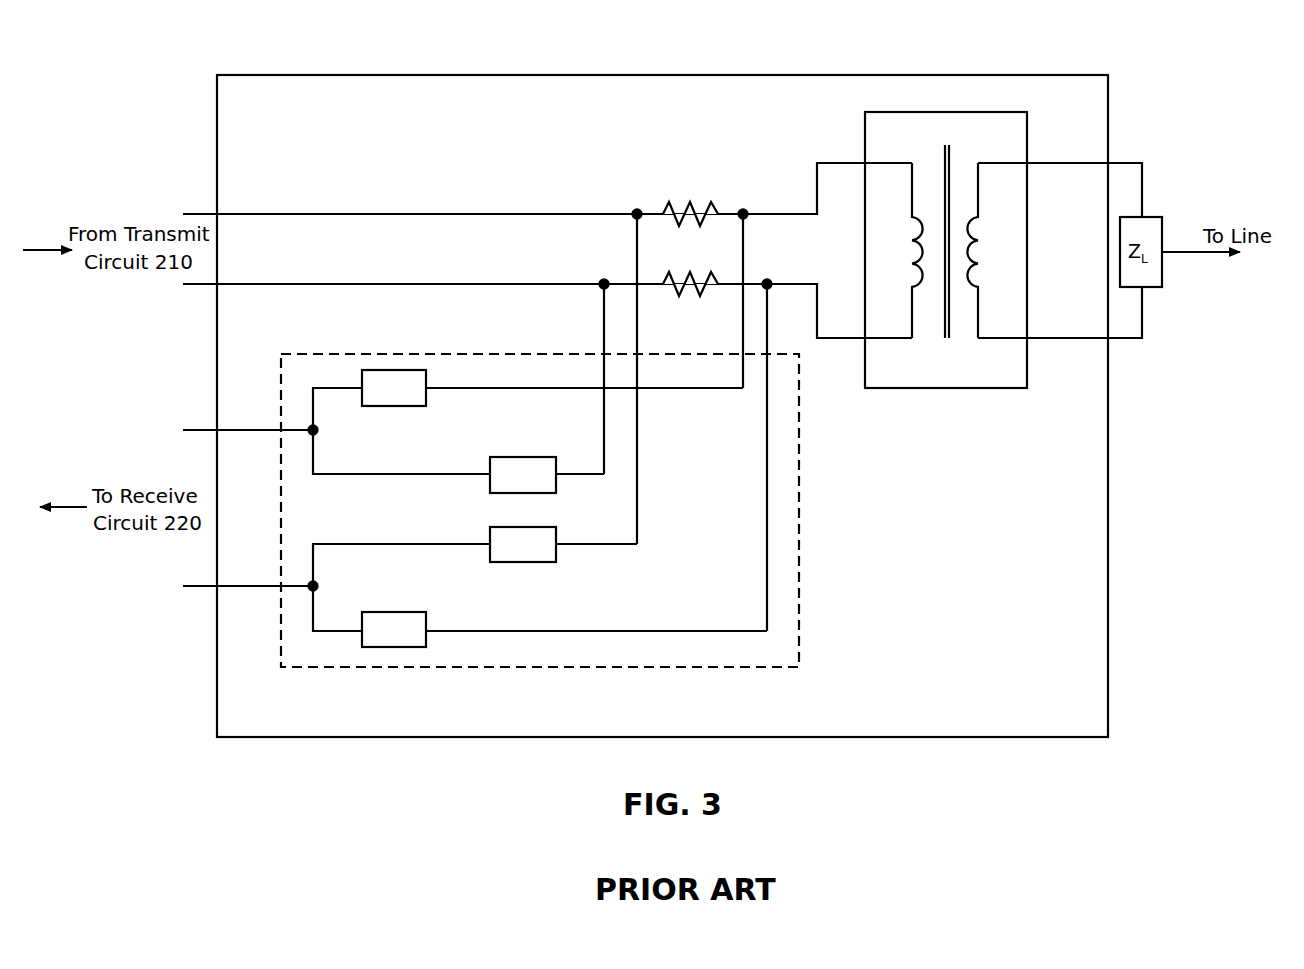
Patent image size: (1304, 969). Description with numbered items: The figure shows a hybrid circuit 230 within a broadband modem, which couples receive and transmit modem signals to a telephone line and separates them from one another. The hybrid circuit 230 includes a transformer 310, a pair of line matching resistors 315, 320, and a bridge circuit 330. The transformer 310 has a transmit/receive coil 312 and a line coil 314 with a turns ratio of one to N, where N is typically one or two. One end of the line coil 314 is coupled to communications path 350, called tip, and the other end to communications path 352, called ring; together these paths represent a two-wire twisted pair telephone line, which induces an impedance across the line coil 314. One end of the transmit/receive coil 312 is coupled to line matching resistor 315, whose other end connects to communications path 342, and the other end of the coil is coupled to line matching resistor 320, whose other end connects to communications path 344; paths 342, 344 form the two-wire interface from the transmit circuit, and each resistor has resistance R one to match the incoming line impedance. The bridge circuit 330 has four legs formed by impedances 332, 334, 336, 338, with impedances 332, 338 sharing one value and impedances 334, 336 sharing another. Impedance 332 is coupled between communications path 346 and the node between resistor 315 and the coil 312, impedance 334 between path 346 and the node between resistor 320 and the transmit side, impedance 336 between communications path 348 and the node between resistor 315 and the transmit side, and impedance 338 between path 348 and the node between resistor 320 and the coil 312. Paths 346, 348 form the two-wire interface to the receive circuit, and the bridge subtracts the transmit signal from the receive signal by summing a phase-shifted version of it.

The hybrid circuit 230 is at (1108, 100).
The transformer 310 is at (968, 242).
The transmit/receive coil 312 is at (912, 224).
The line coil 314 is at (978, 224).
The line matching resistor 315 is at (695, 207).
The line matching resistor 320 is at (690, 278).
The bridge circuit 330 is at (800, 478).
The impedance 332 is at (410, 370).
The impedance 334 is at (522, 457).
The impedance 336 is at (546, 527).
The impedance 338 is at (410, 612).
The communications path 342 is at (378, 214).
The communications path 344 is at (370, 284).
The communications path 346 is at (232, 430).
The communications path 348 is at (232, 586).
The communications path 350 is at (1122, 164).
The communications path 352 is at (1122, 338).